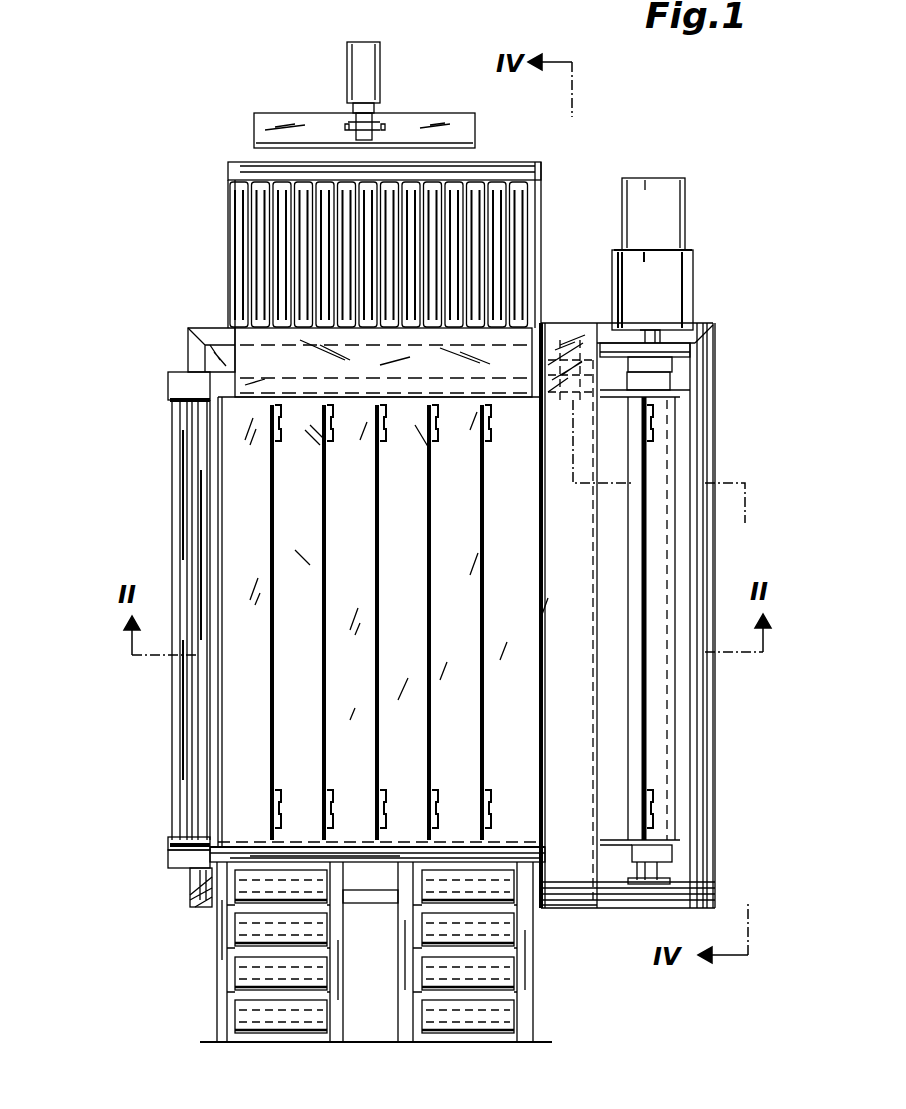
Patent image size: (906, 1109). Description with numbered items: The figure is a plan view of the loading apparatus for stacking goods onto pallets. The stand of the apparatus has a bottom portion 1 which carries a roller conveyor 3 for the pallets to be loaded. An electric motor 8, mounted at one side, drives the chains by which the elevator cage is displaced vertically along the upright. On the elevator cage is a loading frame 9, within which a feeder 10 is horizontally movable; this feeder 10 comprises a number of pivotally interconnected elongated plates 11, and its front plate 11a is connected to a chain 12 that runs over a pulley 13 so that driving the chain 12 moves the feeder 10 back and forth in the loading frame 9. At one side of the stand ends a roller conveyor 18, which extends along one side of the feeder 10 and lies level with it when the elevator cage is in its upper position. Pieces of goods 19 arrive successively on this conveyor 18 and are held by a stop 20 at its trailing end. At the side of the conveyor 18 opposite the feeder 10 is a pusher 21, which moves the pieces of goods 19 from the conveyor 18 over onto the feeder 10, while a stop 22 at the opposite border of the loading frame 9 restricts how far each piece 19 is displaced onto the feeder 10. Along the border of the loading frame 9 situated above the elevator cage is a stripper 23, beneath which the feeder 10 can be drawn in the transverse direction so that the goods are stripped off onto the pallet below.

The bottom portion 1 is at (190, 902).
The roller conveyor 3 is at (228, 976).
The electric motor 8 is at (665, 238).
The loading frame 9 is at (188, 497).
The feeder 10 is at (228, 437).
The elongated plates 11 is at (355, 780).
The front plate 11a is at (228, 706).
The chain 12 is at (552, 915).
The pulley 13 is at (170, 401).
The roller conveyor 18 is at (514, 212).
The pieces of goods 19 is at (365, 257).
The stop 20 is at (540, 272).
The pusher 21 is at (392, 140).
The stop 22 is at (230, 848).
The stripper 23 is at (548, 690).